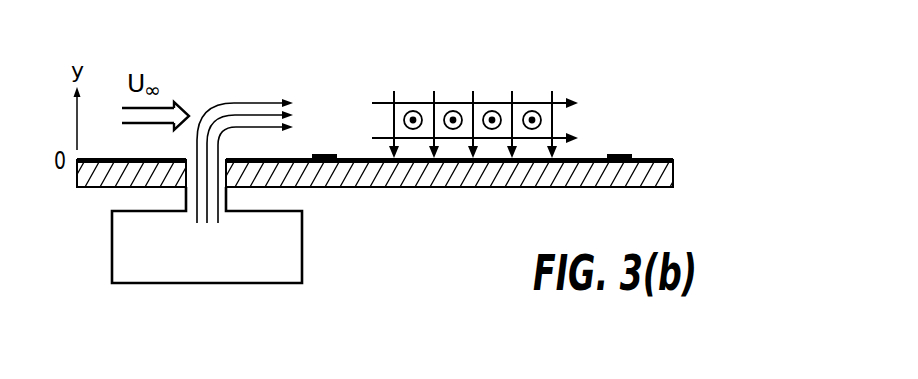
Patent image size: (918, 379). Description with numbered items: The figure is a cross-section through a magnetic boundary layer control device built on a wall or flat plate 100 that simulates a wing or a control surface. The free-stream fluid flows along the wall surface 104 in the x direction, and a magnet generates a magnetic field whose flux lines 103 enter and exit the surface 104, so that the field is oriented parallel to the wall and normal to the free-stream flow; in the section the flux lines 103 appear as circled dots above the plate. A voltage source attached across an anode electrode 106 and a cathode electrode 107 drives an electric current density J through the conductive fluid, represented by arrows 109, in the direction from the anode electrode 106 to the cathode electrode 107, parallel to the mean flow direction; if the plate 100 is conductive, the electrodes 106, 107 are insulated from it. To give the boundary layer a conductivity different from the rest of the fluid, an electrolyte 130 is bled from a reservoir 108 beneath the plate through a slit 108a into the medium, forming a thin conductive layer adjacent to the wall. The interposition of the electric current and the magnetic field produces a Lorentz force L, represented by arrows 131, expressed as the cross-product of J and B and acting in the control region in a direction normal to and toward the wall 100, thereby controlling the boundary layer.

The wall or flat plate 100 is at (673, 175).
The flux lines 103 is at (453, 129).
The surface of the wall 104 is at (588, 158).
The anode electrode 106 is at (323, 153).
The cathode electrode 107 is at (625, 156).
The reservoir 108 is at (213, 283).
The slit 108a is at (189, 150).
The arrows representing electric current density 109 is at (581, 100).
The electrolyte 130 is at (235, 103).
The arrows representing Lorentz force 131 is at (552, 93).